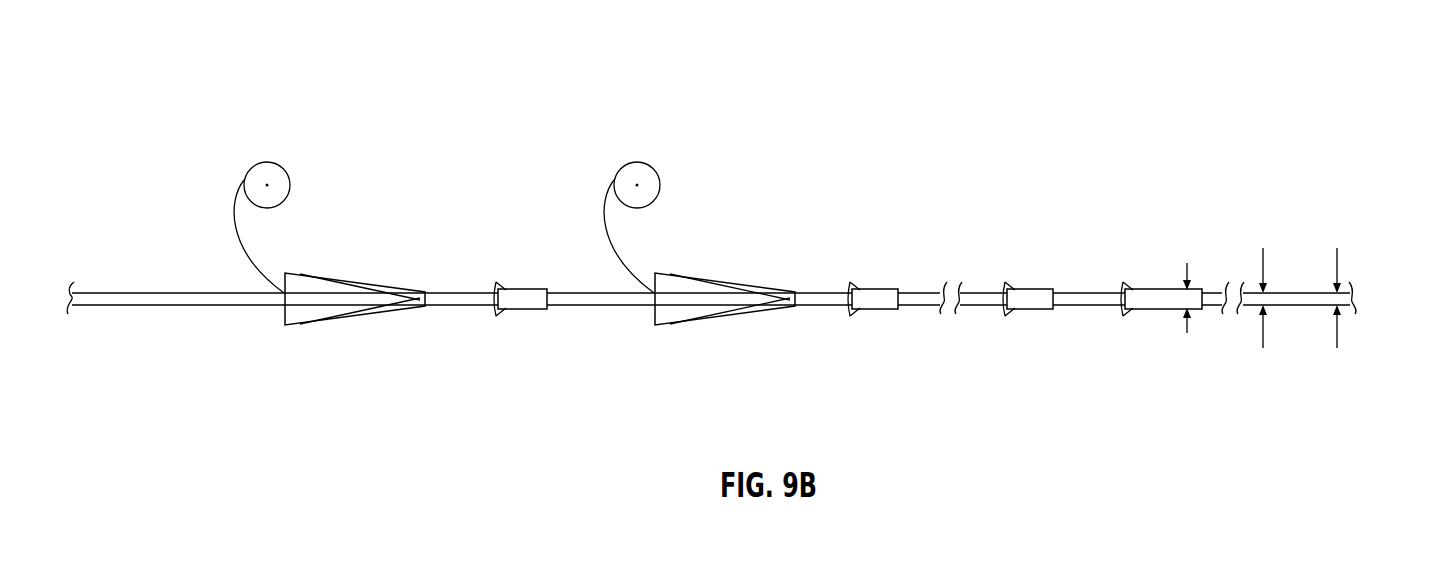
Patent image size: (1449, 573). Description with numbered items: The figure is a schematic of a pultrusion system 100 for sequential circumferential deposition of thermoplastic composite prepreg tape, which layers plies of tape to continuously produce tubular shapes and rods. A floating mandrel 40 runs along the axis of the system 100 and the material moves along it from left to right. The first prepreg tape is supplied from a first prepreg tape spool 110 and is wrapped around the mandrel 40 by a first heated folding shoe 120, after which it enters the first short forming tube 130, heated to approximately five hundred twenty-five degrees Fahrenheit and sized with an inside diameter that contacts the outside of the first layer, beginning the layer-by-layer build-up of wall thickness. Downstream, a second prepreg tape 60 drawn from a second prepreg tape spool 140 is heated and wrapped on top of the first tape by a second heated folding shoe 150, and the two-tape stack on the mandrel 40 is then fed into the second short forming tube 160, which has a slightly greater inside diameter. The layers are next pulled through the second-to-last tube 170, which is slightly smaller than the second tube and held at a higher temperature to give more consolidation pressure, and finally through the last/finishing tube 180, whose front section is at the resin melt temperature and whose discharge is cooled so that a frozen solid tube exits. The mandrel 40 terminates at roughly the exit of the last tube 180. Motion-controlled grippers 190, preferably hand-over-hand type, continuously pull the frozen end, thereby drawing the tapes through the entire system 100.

The system 100 is at (276, 74).
The floating mandrel 40 is at (195, 306).
The first prepreg tape spool 110 is at (282, 178).
The first heated folding shoe 120 is at (323, 324).
The first short forming tube 130 is at (523, 288).
The second prepreg tape spool 140 is at (652, 176).
The second prepreg tape 60 is at (613, 257).
The second heated folding shoe 150 is at (693, 324).
The second short forming tube 160 is at (873, 288).
The second-to-last tube 170 is at (1030, 288).
The last/finishing tube 180 is at (1152, 288).
The grippers 190 is at (1281, 246).